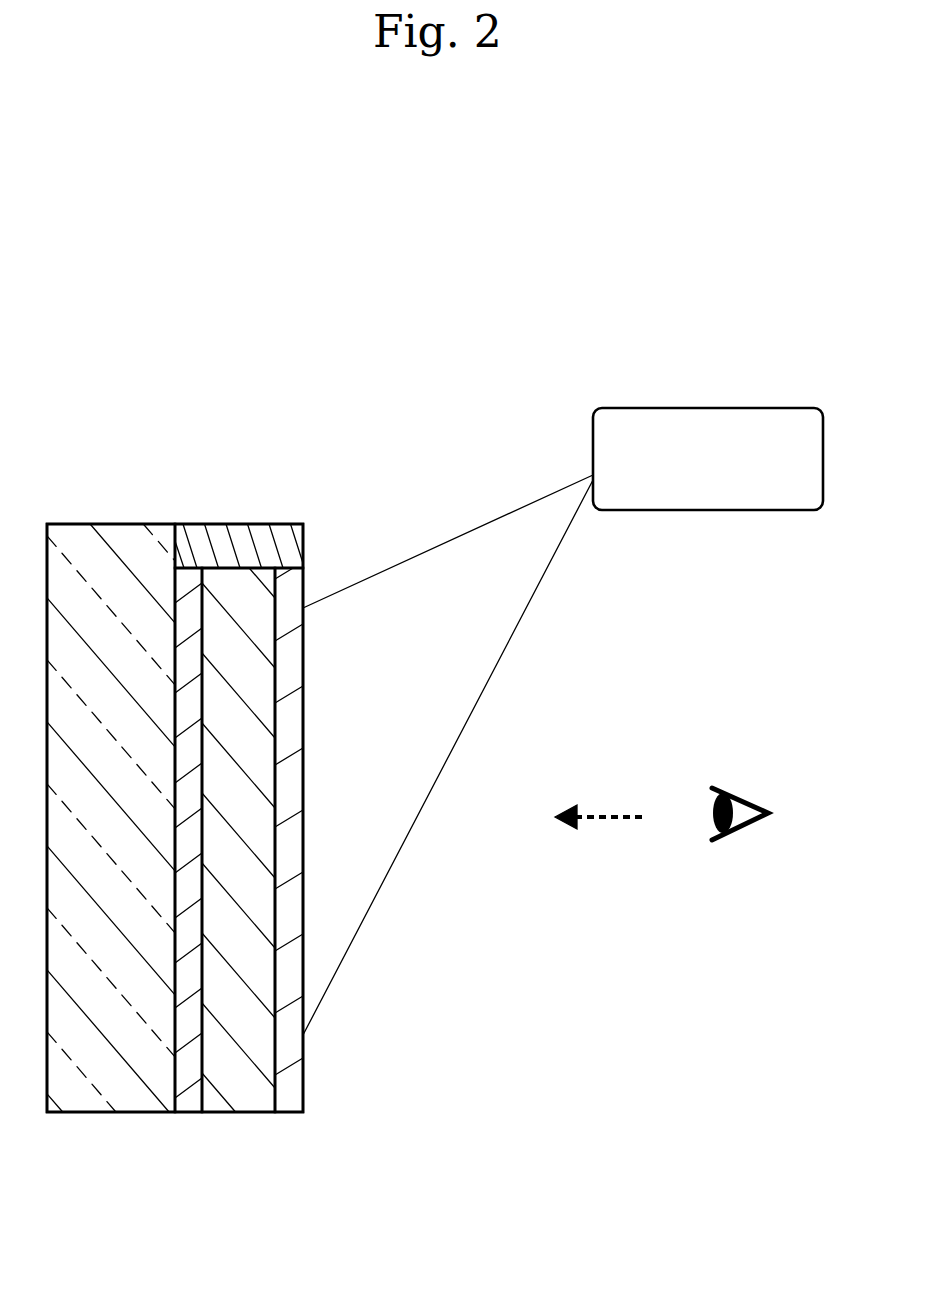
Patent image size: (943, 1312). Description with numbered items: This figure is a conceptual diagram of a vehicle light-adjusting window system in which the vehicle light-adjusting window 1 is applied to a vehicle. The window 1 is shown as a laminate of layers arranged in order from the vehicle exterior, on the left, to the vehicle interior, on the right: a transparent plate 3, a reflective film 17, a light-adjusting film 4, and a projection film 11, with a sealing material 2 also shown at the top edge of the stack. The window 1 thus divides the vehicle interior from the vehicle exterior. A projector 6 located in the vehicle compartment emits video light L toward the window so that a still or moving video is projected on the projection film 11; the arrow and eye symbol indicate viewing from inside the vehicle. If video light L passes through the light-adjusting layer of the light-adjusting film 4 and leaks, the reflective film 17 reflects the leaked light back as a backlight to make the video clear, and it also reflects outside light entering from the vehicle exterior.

The vehicle light-adjusting window 1 is at (80, 1195).
The sealing material 2 is at (241, 535).
The transparent plate 3 is at (98, 1105).
The light-adjusting film 4 is at (237, 1106).
The projector 6 is at (755, 428).
The projection film 11 is at (288, 1106).
The reflective film 17 is at (187, 1106).
The video light L is at (399, 565).